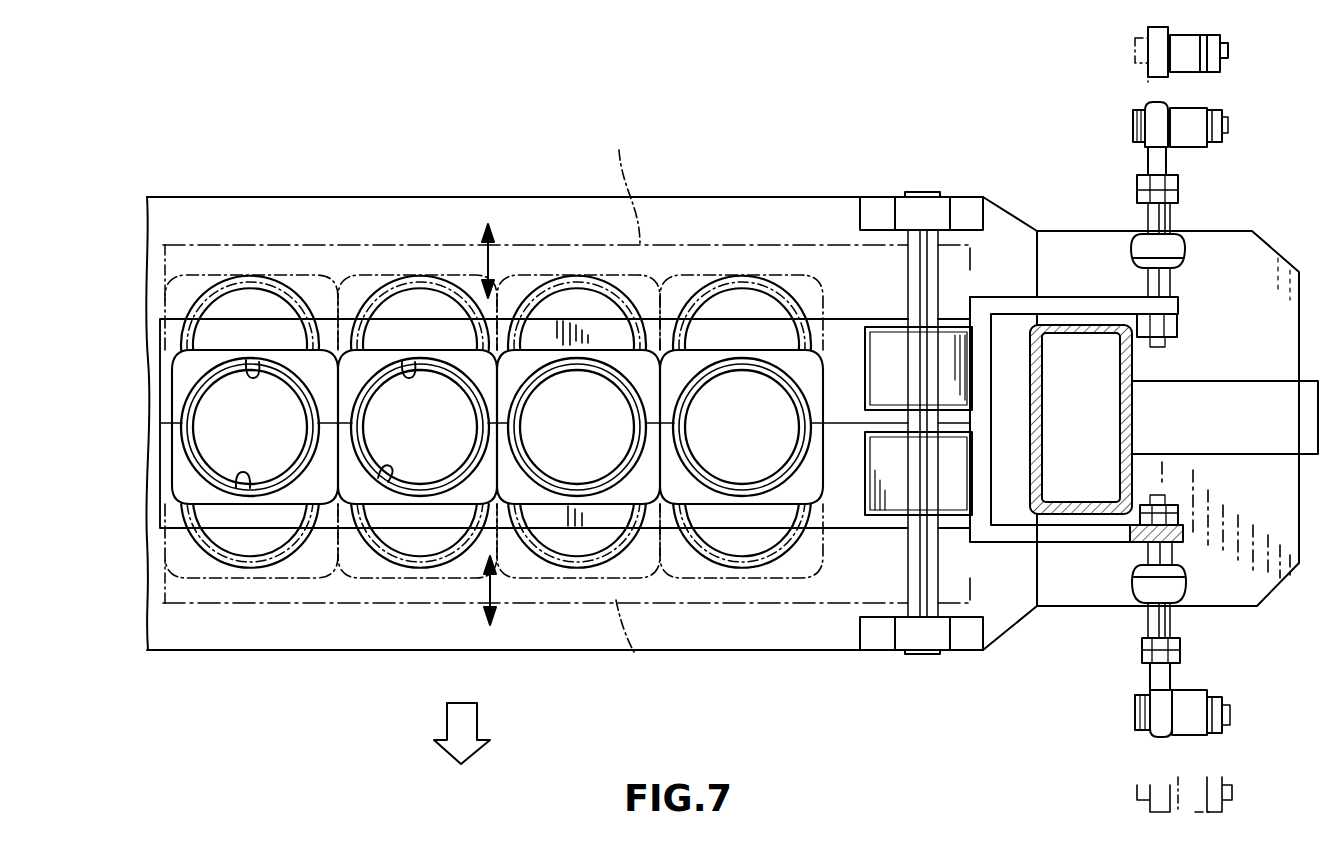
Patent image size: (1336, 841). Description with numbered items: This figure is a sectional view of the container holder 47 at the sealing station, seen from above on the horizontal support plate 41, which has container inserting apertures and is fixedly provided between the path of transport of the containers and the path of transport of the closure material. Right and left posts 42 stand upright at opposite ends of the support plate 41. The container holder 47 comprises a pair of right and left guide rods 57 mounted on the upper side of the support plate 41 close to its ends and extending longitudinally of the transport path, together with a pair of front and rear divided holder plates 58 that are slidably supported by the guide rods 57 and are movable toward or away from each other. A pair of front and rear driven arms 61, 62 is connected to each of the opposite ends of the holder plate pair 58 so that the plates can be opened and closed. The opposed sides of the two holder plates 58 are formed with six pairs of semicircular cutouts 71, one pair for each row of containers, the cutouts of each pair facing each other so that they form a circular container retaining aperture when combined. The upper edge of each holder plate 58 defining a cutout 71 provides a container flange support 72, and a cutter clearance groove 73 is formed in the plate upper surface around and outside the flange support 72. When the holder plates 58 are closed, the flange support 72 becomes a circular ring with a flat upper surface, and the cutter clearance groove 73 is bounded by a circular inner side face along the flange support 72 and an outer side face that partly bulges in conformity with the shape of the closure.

The support plate 41 is at (750, 640).
The post 42 is at (1137, 418).
The container holder 47 is at (773, 229).
The guide rod 57 is at (912, 562).
The holder plate 58 is at (582, 318).
The front driven arm 61 is at (1190, 700).
The rear driven arm 62 is at (1190, 137).
The semicircular cutout 71 is at (248, 364).
The container flange support 72 is at (190, 402).
The cutter clearance groove 73 is at (177, 368).